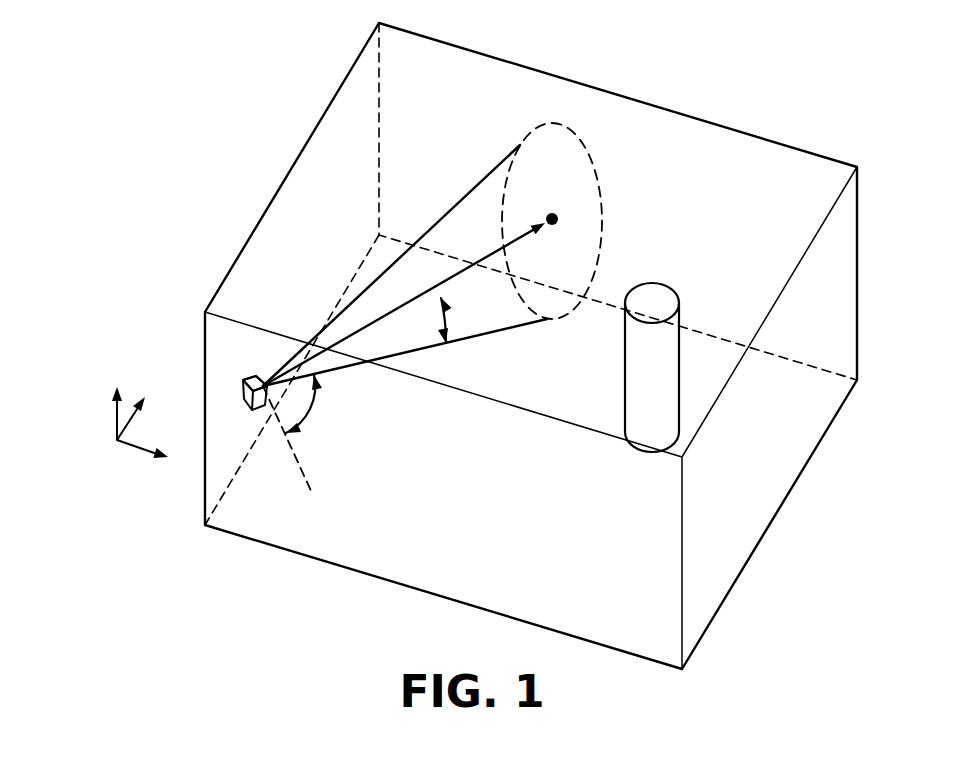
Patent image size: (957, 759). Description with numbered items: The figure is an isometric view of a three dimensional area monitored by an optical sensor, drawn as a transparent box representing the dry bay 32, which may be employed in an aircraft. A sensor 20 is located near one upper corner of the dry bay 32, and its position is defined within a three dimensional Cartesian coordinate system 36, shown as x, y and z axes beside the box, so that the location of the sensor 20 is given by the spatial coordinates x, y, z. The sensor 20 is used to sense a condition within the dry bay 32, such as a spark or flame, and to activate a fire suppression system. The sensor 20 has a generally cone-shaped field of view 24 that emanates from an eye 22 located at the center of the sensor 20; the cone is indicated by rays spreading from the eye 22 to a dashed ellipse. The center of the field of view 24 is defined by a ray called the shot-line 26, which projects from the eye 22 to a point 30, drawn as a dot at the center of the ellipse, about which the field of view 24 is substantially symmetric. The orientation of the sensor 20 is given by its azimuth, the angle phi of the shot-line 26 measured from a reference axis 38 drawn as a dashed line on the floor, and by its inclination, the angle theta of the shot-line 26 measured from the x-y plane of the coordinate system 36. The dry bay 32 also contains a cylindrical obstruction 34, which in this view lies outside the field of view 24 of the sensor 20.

The sensor 20 is at (251, 377).
The eye 22 is at (270, 376).
The field of view 24 is at (467, 222).
The shot-line 26 is at (374, 322).
The point 30 is at (552, 215).
The dry bay 32 is at (782, 172).
The obstruction 34 is at (652, 303).
The 3-D Cartesian coordinate system 36 is at (98, 441).
The reference axis 38 is at (303, 475).